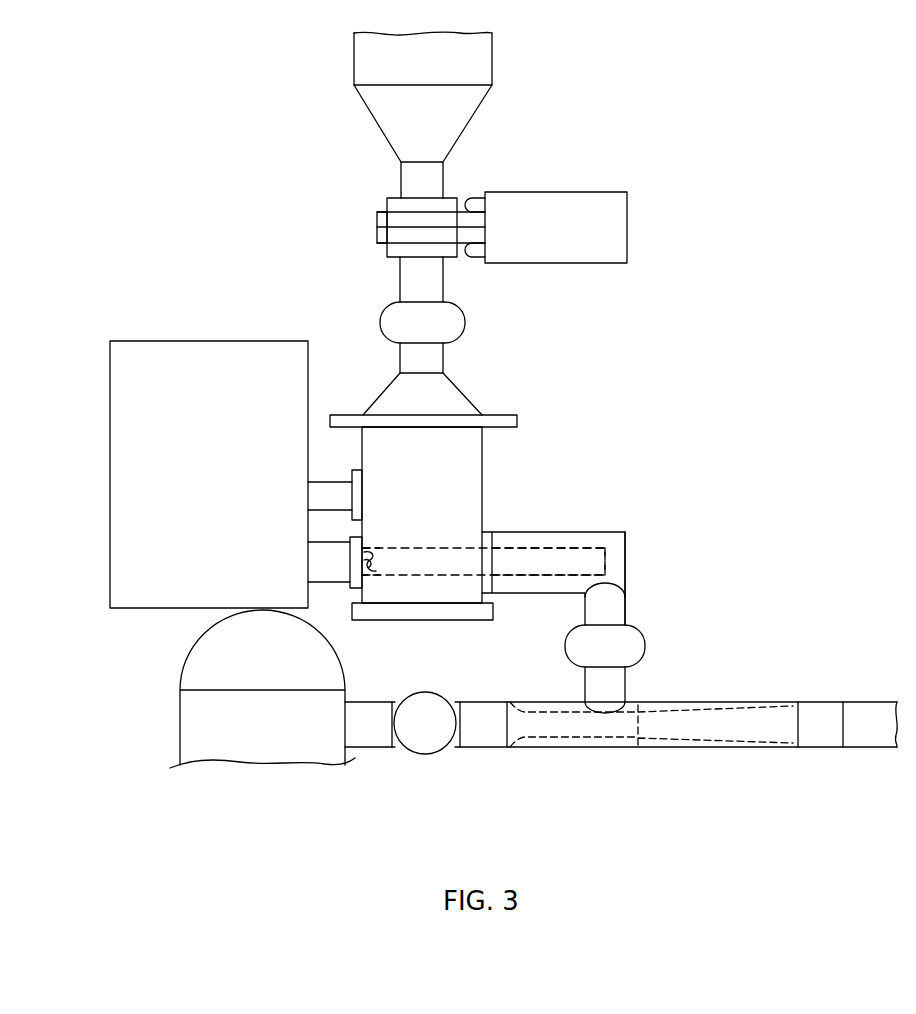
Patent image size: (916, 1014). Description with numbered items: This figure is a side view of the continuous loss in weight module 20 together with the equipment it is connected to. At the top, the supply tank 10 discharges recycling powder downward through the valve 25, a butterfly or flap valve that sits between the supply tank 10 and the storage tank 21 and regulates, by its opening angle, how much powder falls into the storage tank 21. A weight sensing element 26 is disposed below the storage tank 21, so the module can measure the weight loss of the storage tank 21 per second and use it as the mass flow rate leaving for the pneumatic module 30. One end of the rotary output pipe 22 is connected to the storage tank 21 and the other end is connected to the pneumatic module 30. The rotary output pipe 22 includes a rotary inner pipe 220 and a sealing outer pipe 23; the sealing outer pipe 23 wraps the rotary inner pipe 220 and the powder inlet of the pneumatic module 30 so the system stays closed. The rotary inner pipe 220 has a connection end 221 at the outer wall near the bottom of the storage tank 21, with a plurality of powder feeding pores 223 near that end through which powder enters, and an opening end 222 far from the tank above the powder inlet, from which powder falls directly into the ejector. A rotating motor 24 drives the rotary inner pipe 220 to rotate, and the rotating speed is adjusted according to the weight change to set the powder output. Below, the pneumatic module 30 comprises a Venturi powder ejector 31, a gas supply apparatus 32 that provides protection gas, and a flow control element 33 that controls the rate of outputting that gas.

The supply tank 10 is at (533, 112).
The continuous loss in weight module 20 is at (572, 318).
The storage tank 21 is at (438, 438).
The rotary output pipe 22 is at (611, 515).
The rotary inner pipe 220 is at (572, 548).
The connection end 221 is at (380, 565).
The opening end 222 is at (605, 563).
The powder feeding pores 223 is at (373, 600).
The sealing outer pipe 23 is at (627, 542).
The rotating motor 24 is at (155, 362).
The valve 25 is at (400, 217).
The weight sensing element 26 is at (467, 612).
The pneumatic module 30 is at (607, 758).
The Venturi powder ejector 31 is at (688, 727).
The gas supply apparatus 32 is at (215, 725).
The flow control element 33 is at (428, 733).